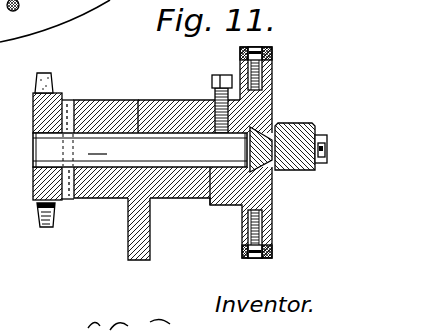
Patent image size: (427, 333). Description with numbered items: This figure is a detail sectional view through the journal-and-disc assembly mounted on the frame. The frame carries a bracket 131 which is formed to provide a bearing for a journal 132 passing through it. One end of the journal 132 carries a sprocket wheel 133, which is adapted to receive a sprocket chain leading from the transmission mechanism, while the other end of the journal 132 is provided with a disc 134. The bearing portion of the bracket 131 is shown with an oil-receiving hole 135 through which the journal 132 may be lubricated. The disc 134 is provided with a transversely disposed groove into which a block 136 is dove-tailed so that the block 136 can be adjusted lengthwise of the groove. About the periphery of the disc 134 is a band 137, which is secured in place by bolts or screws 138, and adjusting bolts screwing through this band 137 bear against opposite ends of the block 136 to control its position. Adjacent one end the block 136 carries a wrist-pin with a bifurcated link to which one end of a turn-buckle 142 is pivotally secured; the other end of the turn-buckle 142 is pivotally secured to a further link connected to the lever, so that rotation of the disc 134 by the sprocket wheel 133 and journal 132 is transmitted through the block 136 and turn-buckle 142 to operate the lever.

The bracket 131 is at (132, 260).
The journal 132 is at (97, 132).
The sprocket wheel 133 is at (37, 207).
The disc 134 is at (283, 70).
The oil-receiving hole 135 is at (138, 130).
The block 136 is at (264, 172).
The band 137 is at (273, 52).
The bolts or screws 138 is at (254, 49).
The turn-buckle 142 is at (312, 107).